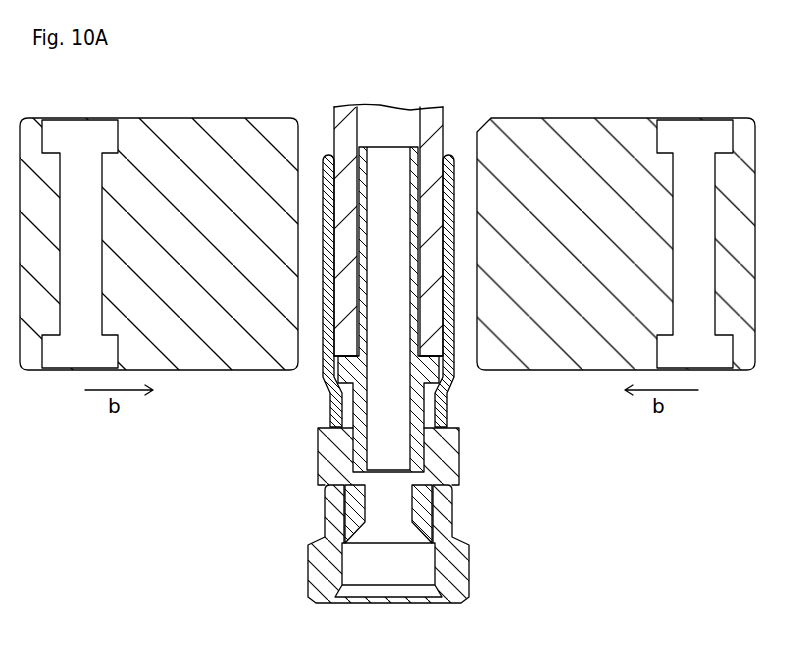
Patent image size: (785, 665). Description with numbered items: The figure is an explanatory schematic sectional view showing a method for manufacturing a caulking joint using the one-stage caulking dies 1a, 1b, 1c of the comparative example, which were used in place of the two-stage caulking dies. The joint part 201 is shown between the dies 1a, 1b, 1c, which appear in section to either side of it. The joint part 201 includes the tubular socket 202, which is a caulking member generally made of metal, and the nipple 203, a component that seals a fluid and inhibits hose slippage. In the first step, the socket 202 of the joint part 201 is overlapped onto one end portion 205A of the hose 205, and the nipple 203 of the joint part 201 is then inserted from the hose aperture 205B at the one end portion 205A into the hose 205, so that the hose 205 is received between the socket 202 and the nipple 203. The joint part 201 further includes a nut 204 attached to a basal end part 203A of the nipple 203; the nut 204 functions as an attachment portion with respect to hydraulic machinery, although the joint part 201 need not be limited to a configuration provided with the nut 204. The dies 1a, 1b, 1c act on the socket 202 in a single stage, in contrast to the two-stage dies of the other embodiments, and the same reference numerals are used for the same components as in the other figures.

The one-stage caulking die 1a is at (387, 198).
The one-stage caulking die 1b is at (387, 198).
The one-stage caulking die 1c is at (169, 114).
The joint part 201 is at (197, 388).
The tubular socket (ferrule) 202 is at (328, 280).
The nipple 203 is at (362, 333).
The basal end part of the nipple 203A is at (350, 502).
The nut 204 is at (310, 557).
The hose 205 is at (347, 103).
The one end portion of the hose 205A is at (350, 213).
The hose aperture 205B is at (336, 357).